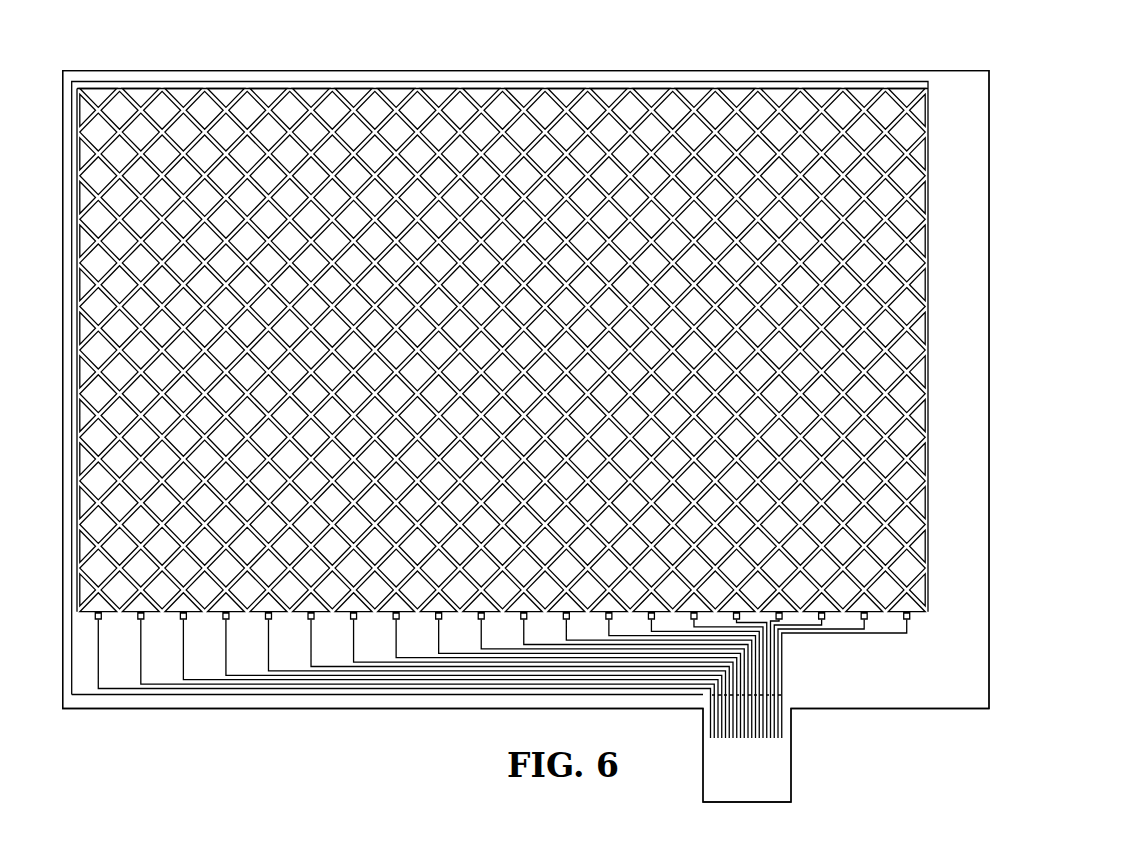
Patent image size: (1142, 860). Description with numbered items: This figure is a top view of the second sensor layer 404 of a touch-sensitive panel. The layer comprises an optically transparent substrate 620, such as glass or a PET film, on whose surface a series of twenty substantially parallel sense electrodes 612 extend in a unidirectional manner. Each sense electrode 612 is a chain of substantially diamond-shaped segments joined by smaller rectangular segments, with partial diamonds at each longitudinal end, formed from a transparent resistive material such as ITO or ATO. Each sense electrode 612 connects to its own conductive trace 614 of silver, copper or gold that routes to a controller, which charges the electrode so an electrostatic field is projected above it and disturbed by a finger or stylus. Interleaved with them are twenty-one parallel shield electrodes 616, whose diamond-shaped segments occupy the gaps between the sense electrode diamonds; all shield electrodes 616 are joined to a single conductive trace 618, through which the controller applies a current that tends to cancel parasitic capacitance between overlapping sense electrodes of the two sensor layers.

The second sensor layer 404 is at (1066, 110).
The sense electrodes 612 is at (98, 88).
The conductive traces 614 is at (786, 695).
The shield electrodes 616 is at (77, 88).
The conductive trace 618 is at (232, 695).
The substrate 620 is at (977, 649).